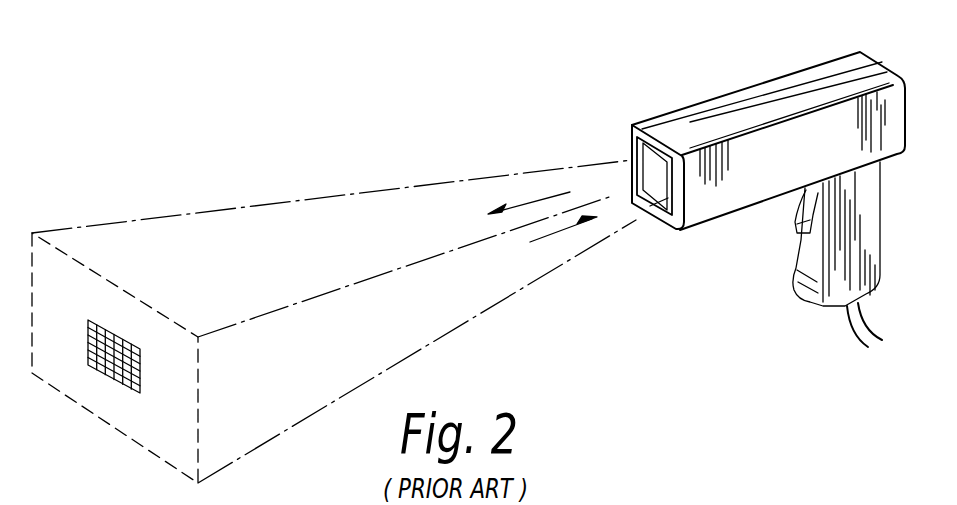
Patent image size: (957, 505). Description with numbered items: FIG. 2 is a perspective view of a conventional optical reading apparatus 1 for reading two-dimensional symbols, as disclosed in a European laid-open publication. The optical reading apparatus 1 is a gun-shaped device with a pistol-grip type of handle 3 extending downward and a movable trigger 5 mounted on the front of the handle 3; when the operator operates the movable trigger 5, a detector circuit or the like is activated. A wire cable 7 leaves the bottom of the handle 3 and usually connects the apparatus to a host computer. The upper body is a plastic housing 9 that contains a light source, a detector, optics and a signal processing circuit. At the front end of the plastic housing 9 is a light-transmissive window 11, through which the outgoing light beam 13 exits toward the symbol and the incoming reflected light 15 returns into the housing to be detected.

The optical reading apparatus 1 is at (682, 117).
The handle 3 is at (868, 225).
The movable trigger 5 is at (802, 232).
The wire cable 7 is at (850, 332).
The plastic housing 9 is at (793, 82).
The light-transmissive window 11 is at (653, 157).
The outgoing light beam 13 is at (536, 201).
The incoming reflected light 15 is at (540, 244).